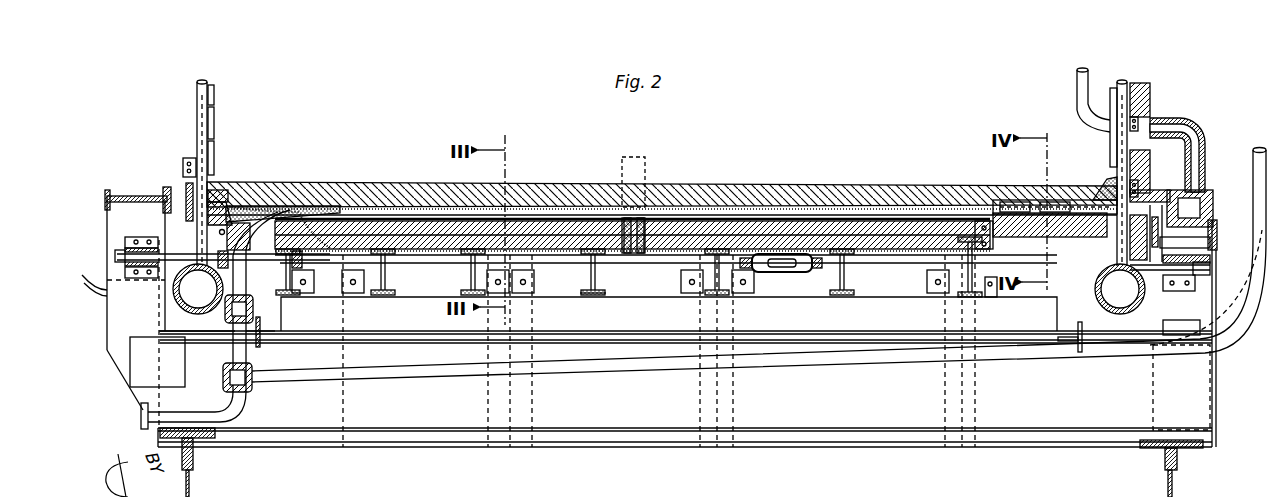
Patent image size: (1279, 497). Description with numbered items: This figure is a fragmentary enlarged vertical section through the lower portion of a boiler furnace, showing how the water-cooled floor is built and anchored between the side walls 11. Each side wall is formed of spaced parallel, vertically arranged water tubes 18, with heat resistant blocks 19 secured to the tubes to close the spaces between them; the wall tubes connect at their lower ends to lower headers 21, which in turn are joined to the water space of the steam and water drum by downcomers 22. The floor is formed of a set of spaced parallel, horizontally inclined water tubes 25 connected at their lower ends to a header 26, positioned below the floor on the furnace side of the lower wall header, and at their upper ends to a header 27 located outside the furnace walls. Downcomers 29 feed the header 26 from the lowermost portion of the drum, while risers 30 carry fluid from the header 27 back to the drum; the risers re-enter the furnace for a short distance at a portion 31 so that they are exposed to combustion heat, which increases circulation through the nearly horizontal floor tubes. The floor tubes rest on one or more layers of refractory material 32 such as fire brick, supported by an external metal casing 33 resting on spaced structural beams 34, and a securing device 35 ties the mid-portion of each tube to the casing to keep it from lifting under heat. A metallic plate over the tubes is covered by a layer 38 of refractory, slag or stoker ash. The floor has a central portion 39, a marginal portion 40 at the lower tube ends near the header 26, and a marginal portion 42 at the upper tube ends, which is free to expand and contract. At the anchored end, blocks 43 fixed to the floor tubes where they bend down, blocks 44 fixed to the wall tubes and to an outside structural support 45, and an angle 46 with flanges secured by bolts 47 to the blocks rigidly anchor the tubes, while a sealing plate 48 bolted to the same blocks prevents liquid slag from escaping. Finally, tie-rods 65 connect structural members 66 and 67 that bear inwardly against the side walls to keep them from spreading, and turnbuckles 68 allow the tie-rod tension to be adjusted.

The side walls 11 is at (196, 98).
The water tubes 18 is at (205, 82).
The heat resistant blocks 19 is at (215, 122).
The lower headers 21 is at (198, 315).
The downcomers 22 is at (94, 272).
The floor water tubes 25 is at (552, 216).
The header 26 is at (250, 302).
The header 27 is at (1206, 183).
The downcomers 29 is at (640, 370).
The risers 30 is at (1183, 137).
The re-entering portion of risers 31 is at (1076, 89).
The refractory material 32 is at (690, 232).
The external metal casing 33 is at (558, 256).
The structural beams 34 is at (598, 288).
The securing device 35 is at (633, 256).
The refractory layer 38 is at (826, 186).
The central portion 39 is at (624, 186).
The marginal portion 40 is at (262, 183).
The marginal portion 42 is at (958, 200).
The blocks 43 is at (326, 184).
The blocks 44 is at (233, 183).
The structural support 45 is at (168, 190).
The angle 46 is at (226, 240).
The bolts 47 is at (212, 225).
The sealing plate 48 is at (292, 188).
The tie-rods 65 is at (868, 266).
The structural member 66 is at (128, 200).
The structural member 67 is at (1214, 228).
The turnbuckles 68 is at (782, 274).